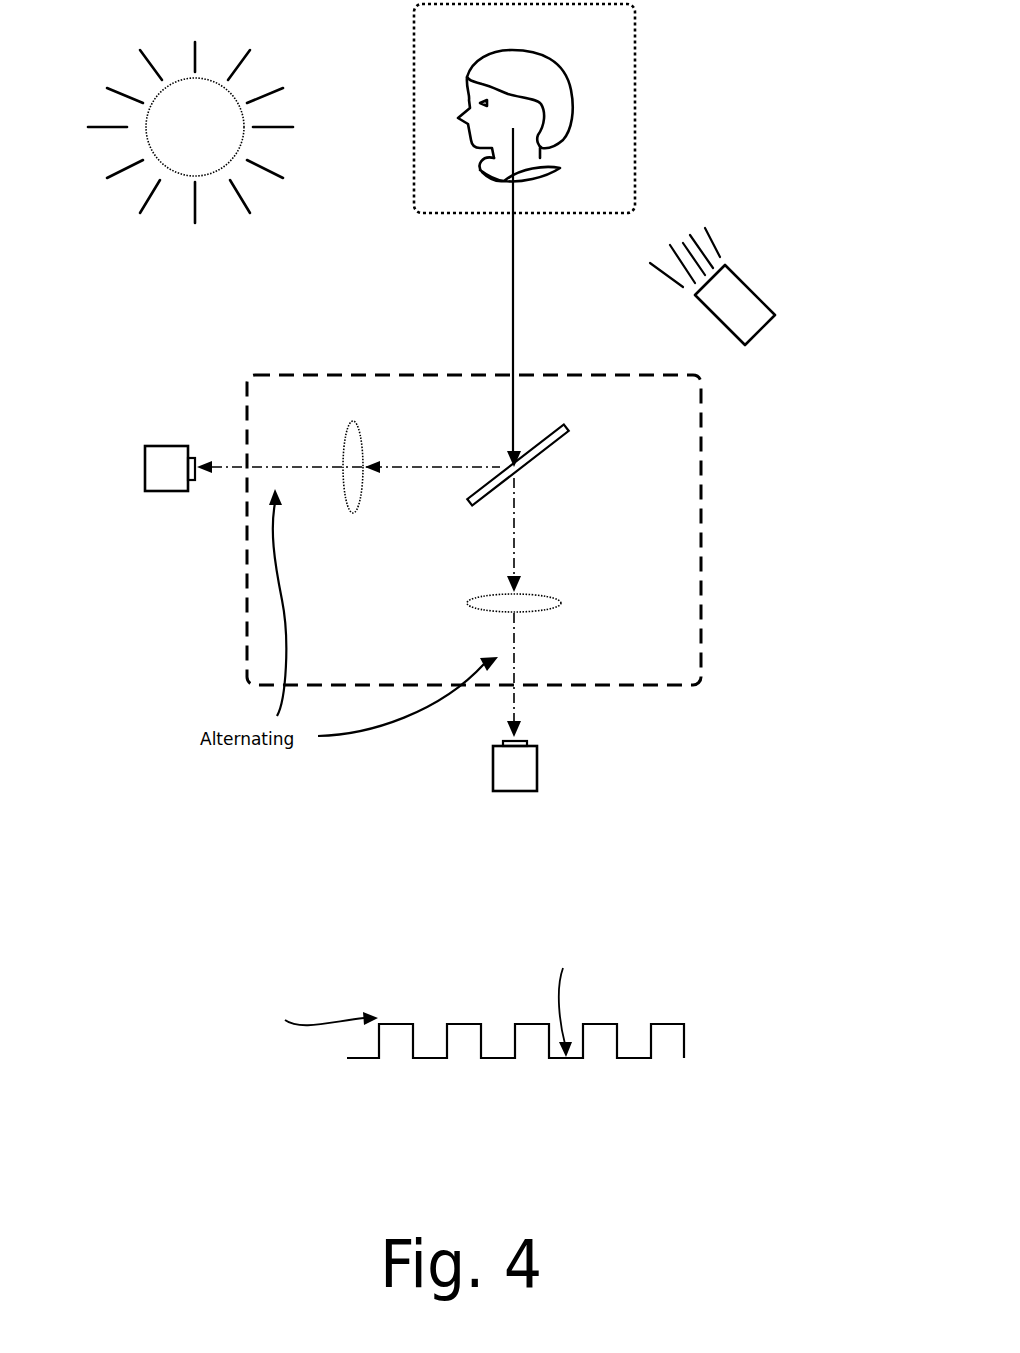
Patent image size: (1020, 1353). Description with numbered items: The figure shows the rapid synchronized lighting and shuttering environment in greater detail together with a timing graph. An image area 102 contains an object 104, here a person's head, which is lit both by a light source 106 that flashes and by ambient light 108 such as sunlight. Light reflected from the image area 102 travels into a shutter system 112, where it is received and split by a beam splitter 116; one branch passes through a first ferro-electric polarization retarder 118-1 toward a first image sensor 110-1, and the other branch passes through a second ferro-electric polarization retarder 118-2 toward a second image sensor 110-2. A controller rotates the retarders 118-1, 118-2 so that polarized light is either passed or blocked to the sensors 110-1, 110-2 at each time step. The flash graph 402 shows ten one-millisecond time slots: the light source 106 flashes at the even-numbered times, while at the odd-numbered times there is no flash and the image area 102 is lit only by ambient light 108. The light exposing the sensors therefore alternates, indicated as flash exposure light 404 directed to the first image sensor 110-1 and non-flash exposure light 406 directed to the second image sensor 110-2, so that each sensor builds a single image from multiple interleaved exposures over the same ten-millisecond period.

The image area 102 is at (636, 102).
The object 104 is at (533, 50).
The light source 106 is at (752, 284).
The ambient light 108 is at (168, 240).
The first image sensor 110-1 is at (146, 446).
The second image sensor 110-2 is at (538, 748).
The shutter system 112 is at (703, 530).
The beam splitter 116 is at (572, 433).
The first ferro-electric polarization retarder 118-1 is at (362, 440).
The second ferro-electric polarization retarder 118-2 is at (545, 595).
The flash graph 402 is at (682, 884).
The flash exposure light 404 is at (297, 467).
The non-flash exposure light 406 is at (516, 665).